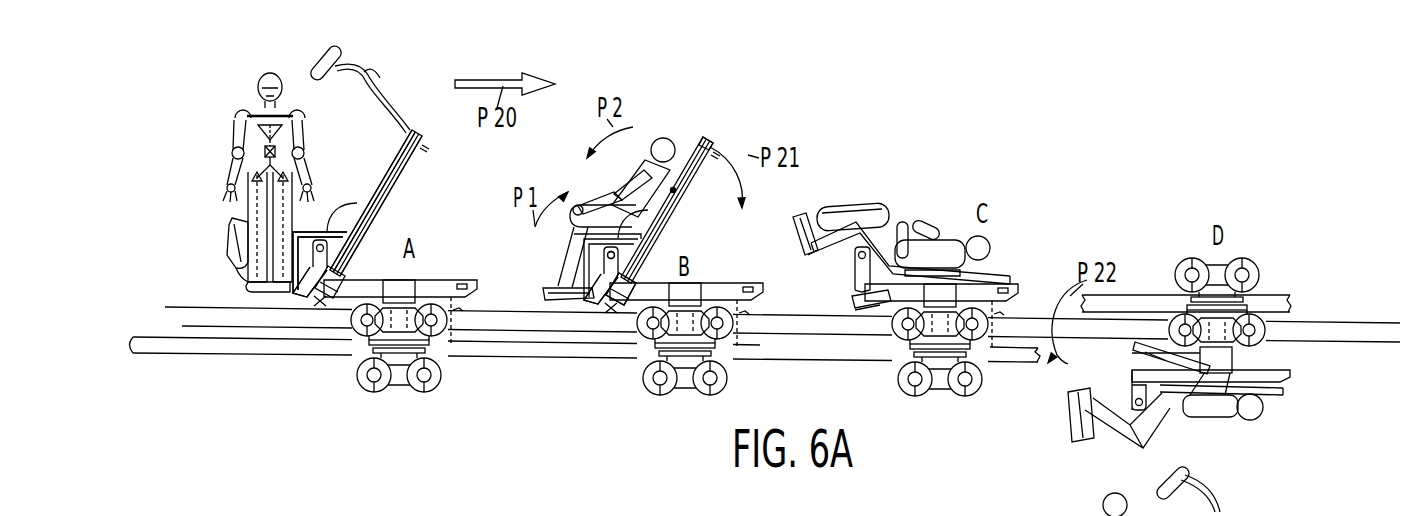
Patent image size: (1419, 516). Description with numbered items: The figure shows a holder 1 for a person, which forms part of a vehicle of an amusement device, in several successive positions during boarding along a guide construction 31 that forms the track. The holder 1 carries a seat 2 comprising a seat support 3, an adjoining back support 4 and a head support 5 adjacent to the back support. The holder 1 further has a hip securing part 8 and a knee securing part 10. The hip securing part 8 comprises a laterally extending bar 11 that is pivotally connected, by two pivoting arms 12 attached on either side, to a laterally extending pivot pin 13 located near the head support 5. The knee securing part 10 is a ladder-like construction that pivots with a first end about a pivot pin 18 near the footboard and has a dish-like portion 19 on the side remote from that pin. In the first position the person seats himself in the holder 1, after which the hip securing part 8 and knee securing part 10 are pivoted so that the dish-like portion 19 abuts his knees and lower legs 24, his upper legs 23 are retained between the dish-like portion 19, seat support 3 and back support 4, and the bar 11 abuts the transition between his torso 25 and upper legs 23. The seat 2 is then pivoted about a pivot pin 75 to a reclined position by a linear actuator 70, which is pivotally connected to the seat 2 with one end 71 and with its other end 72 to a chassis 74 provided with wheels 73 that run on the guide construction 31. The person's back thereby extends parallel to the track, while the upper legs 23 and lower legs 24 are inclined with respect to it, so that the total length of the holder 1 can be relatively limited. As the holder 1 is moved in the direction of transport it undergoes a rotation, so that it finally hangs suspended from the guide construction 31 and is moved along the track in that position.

The holder 1 is at (220, 153).
The seat 2 is at (362, 171).
The seat support 3 is at (318, 233).
The back support 4 is at (380, 193).
The head support 5 is at (393, 162).
The hip securing part 8 is at (391, 70).
The knee securing part 10 is at (211, 259).
The bar 11 is at (317, 72).
The pivoting arms 12 is at (378, 102).
The pivot pin 13 is at (724, 123).
The pivot pin 18 is at (297, 288).
The dish-like portion 19 is at (230, 233).
The upper legs 23 is at (882, 228).
The lower legs 24 is at (837, 226).
The torso 25 is at (1222, 397).
The guide construction 31 is at (1018, 355).
The linear actuator 70 is at (632, 245).
The end 71 is at (695, 197).
The end 72 is at (621, 334).
The wheels 73 is at (720, 378).
The chassis 74 is at (552, 323).
The pivot pin 75 is at (565, 265).